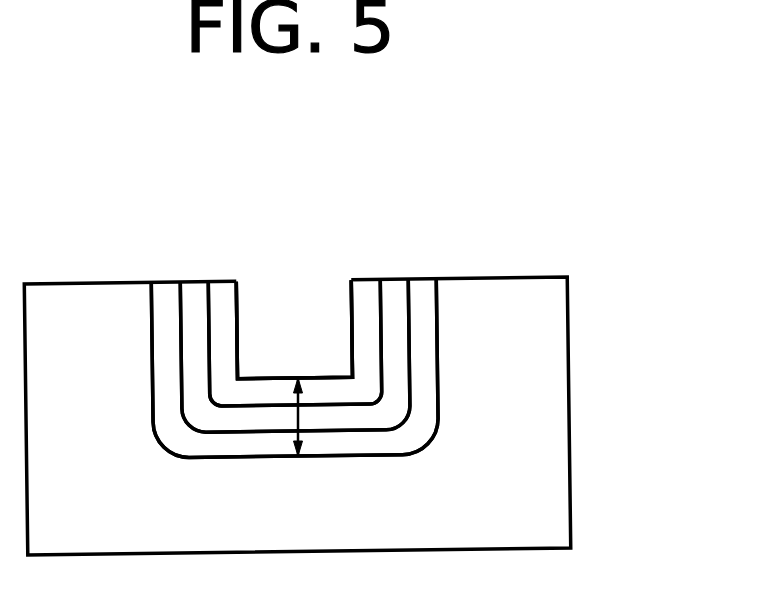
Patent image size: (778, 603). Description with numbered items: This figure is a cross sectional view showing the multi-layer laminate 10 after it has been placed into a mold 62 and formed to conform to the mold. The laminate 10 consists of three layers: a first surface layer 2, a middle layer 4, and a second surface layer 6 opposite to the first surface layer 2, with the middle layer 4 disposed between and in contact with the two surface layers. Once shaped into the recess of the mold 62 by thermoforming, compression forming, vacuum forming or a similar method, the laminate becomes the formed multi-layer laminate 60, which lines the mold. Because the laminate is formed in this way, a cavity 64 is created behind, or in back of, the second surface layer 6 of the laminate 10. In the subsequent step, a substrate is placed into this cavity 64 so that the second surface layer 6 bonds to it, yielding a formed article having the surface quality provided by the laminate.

The first surface layer 2 is at (423, 288).
The middle layer 4 is at (396, 287).
The second surface layer 6 is at (370, 287).
The multi-layer laminate 10 is at (301, 420).
The formed multi-layer laminate 60 is at (240, 269).
The mold 62 is at (553, 302).
The cavity 64 is at (289, 306).